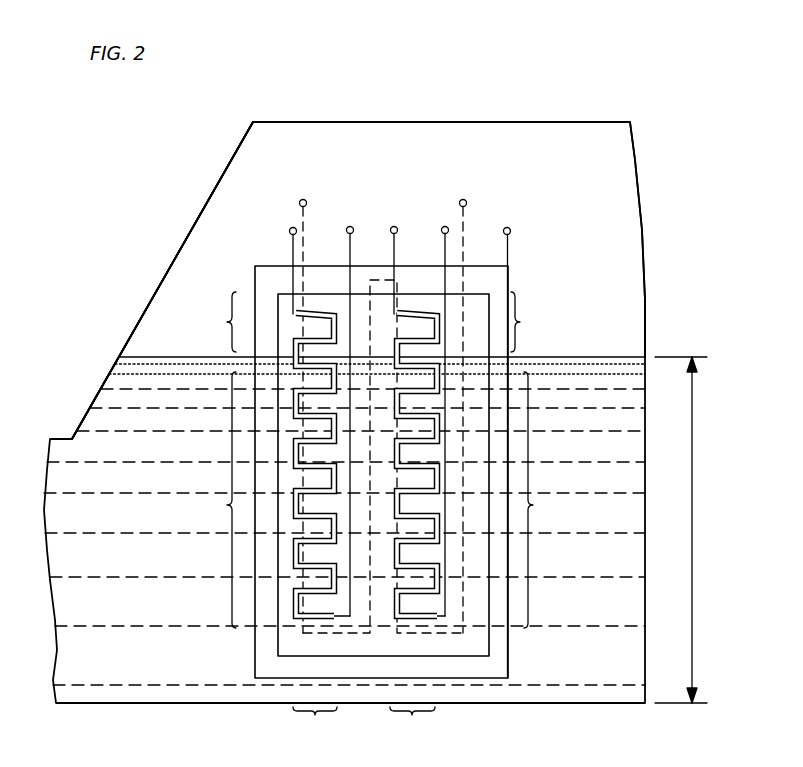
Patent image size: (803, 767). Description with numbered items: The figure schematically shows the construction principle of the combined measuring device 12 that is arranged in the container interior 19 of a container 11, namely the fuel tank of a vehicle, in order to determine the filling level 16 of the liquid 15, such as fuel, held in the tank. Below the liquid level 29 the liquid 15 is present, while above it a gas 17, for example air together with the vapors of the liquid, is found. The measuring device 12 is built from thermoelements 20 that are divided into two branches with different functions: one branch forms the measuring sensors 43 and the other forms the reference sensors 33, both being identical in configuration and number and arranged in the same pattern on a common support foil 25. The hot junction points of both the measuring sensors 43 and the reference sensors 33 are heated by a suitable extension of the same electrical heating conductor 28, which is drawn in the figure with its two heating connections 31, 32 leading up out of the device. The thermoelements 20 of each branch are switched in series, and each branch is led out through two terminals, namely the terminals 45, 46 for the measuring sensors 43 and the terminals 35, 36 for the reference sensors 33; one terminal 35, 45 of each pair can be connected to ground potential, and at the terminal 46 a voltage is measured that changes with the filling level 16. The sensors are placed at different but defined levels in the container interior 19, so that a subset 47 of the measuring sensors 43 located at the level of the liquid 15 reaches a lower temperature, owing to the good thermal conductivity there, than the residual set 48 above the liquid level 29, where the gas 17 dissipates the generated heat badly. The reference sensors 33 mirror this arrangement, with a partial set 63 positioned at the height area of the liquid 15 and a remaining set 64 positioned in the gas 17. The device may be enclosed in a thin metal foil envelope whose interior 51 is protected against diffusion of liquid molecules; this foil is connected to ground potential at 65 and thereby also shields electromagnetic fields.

The container 11 is at (157, 242).
The combined measuring device 12 is at (476, 470).
The liquid 15 is at (141, 668).
The filling level 16 is at (688, 530).
The gas 17 is at (149, 323).
The container interior 19 is at (241, 163).
The thermoelements 20 is at (293, 320).
The support foil 25 is at (472, 648).
The electrical heating conductor 28 is at (379, 266).
The liquid level 29 is at (598, 357).
The terminal 31 is at (306, 201).
The terminal 32 is at (467, 203).
The reference sensors 33 is at (315, 724).
The terminal 35 is at (289, 231).
The terminal 36 is at (350, 226).
The measuring sensors 43 is at (412, 724).
The terminal 45 is at (394, 226).
The terminal 46 is at (442, 228).
The subset of the measuring sensors 47 is at (545, 500).
The residual set of the measuring sensors 48 is at (530, 322).
The interior of the envelope 51 is at (500, 661).
The partial set of the reference sensors 63 is at (215, 500).
The remaining set of the reference sensors 64 is at (217, 322).
The ground connection of the metal foil 65 is at (511, 231).